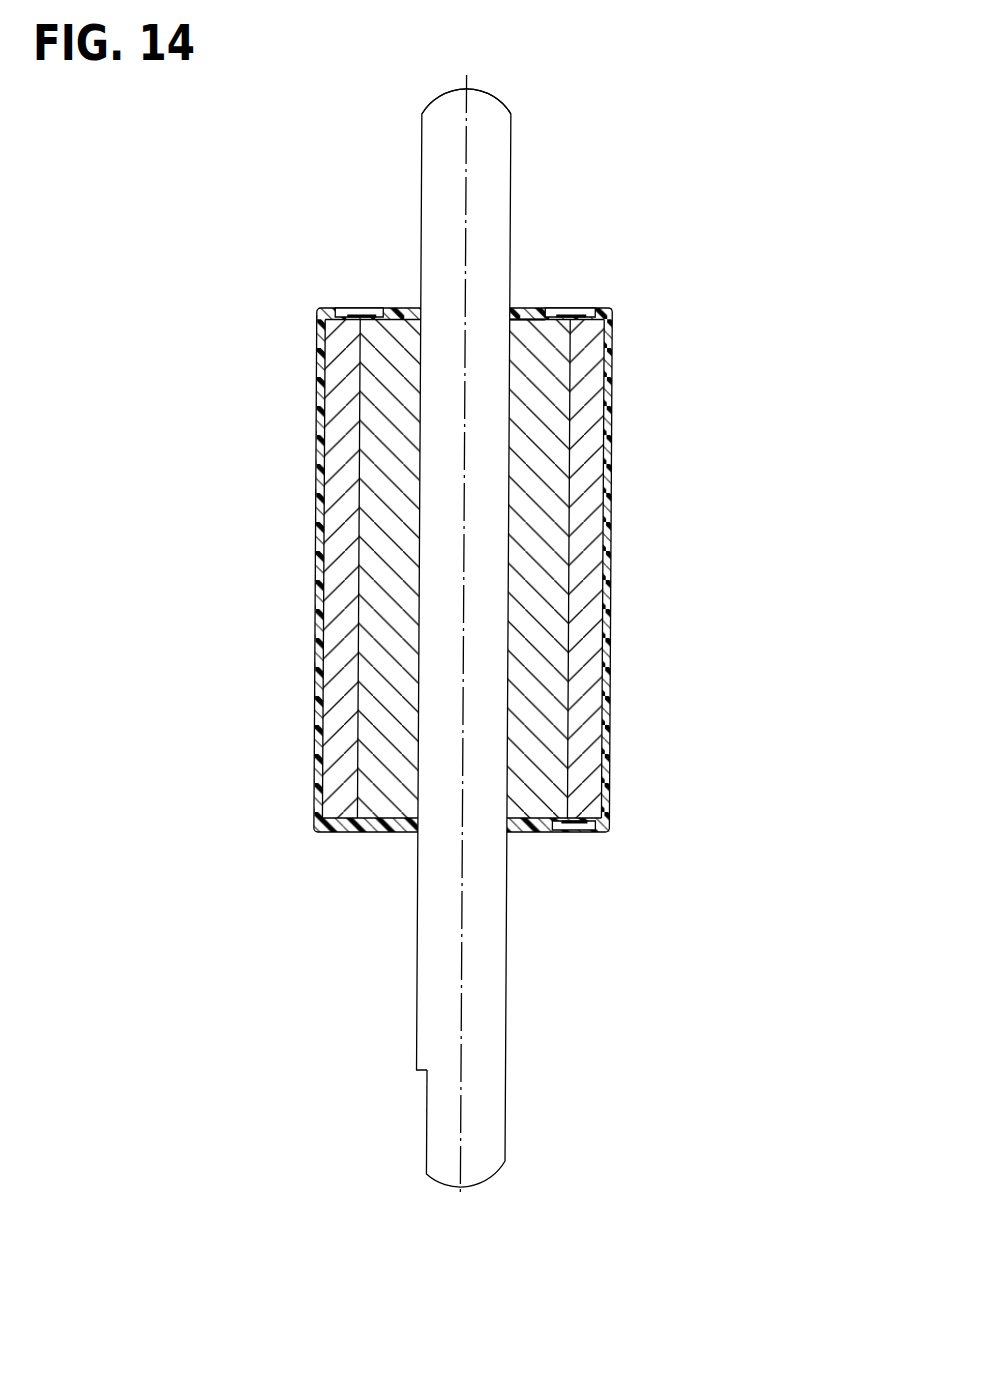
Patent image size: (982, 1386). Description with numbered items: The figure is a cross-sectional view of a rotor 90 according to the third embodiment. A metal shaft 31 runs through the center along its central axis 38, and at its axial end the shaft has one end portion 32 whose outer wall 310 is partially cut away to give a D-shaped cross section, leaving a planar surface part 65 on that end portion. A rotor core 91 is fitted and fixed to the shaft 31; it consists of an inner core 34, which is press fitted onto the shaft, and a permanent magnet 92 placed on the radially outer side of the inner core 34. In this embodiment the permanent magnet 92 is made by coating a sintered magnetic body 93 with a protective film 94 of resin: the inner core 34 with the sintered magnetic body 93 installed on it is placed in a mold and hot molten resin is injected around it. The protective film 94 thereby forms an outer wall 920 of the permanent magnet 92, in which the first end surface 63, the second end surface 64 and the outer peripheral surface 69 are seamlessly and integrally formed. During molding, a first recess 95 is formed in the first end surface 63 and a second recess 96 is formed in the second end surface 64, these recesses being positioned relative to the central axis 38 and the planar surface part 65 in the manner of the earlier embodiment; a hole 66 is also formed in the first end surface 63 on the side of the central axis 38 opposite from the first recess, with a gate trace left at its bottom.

The shaft 31 is at (493, 169).
The one end portion 32 is at (497, 1120).
The central axis 38 is at (464, 136).
The outer wall 310 is at (421, 1052).
The planar surface part 65 is at (433, 1127).
The rotor 90 is at (315, 333).
The rotor core 91 is at (730, 390).
The permanent magnet 92 is at (684, 355).
The sintered magnetic body 93 is at (593, 459).
The protective film 94 is at (609, 391).
The inner core 34 is at (550, 542).
The outer peripheral surface 69 is at (616, 662).
The first end surface 63 is at (404, 310).
The second end surface 64 is at (540, 834).
The first recess 95 is at (360, 311).
The second recess 96 is at (582, 831).
The outer wall 920 is at (520, 310).
The hole 66 is at (577, 310).